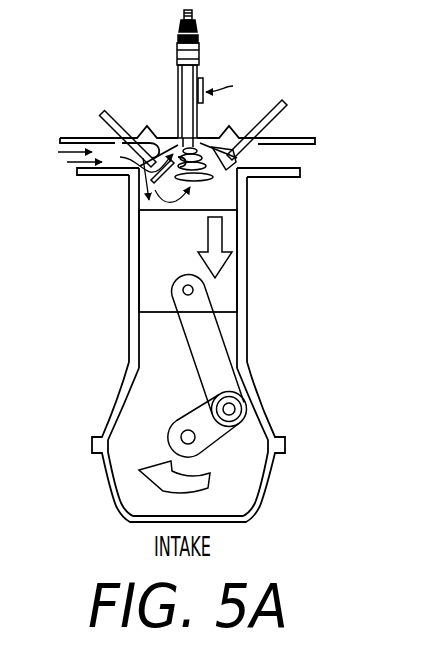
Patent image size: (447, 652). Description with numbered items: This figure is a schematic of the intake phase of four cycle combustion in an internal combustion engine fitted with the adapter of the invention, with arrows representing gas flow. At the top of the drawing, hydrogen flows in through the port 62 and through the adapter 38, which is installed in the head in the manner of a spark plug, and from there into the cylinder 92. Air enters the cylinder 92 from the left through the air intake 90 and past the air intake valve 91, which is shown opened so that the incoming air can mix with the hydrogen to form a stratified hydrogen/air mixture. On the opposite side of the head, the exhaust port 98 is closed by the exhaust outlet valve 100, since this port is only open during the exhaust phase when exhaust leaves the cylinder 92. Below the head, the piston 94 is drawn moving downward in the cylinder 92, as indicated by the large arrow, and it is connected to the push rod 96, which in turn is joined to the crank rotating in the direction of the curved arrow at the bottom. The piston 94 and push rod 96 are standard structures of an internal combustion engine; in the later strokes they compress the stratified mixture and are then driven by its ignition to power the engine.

The adapter 38 is at (163, 96).
The port 62 is at (203, 80).
The air intake 90 is at (145, 178).
The air intake valve 91 is at (116, 130).
The cylinder 92 is at (242, 216).
The piston 94 is at (230, 289).
The push rod 96 is at (207, 339).
The exhaust port 98 is at (248, 161).
The exhaust outlet valve 100 is at (280, 117).